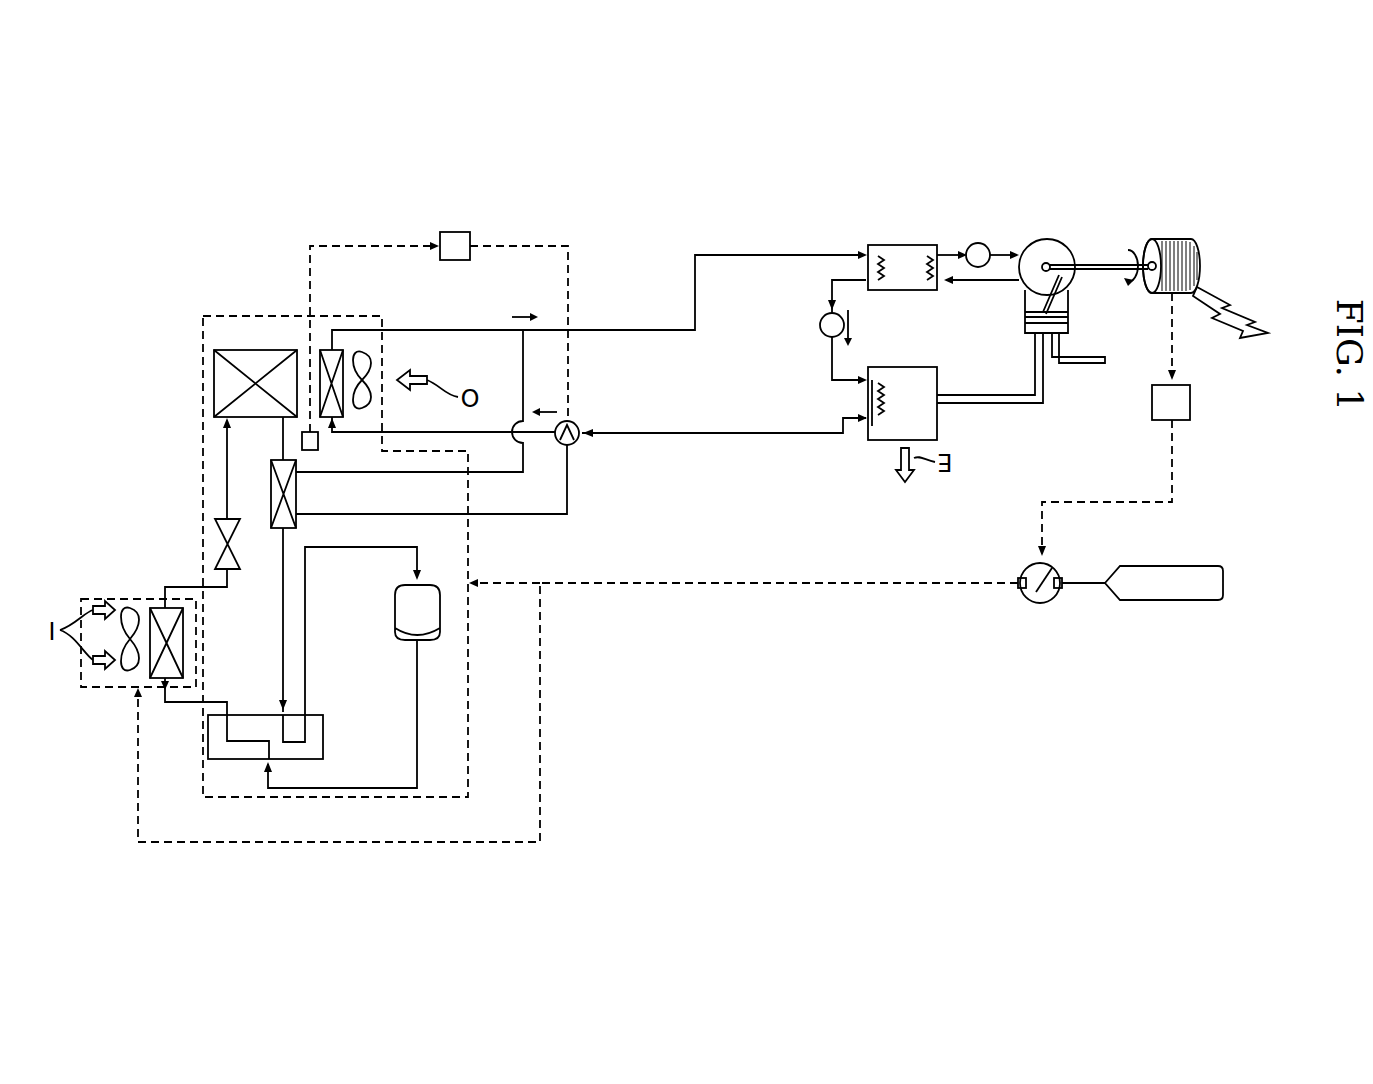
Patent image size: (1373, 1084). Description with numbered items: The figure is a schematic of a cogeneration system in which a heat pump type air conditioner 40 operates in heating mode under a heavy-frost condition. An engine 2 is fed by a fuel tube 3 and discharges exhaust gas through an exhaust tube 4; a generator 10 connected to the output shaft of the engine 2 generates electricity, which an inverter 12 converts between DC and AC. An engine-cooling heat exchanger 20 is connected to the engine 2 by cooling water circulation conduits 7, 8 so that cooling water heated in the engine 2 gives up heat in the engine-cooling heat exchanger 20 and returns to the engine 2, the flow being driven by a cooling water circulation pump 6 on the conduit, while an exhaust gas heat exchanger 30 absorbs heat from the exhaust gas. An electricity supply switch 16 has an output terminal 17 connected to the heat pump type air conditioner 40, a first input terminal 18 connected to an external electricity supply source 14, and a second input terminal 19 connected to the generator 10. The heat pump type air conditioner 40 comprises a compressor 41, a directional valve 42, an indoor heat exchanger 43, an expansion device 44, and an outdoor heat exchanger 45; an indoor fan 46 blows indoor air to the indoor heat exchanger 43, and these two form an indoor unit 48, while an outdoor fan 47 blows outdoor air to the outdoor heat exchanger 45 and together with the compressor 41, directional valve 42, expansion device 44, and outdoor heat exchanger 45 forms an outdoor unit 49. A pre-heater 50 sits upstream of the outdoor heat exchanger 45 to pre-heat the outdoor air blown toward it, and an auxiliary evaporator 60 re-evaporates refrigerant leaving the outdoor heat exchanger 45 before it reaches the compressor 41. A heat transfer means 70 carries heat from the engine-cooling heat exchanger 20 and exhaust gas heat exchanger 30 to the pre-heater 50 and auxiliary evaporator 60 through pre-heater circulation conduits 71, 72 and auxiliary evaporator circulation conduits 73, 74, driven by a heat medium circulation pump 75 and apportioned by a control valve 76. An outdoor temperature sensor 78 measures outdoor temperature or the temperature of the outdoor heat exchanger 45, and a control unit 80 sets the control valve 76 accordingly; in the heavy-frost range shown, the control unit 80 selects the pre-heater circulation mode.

The engine 2 is at (1058, 240).
The fuel tube 3 is at (1083, 358).
The exhaust tube 4 is at (986, 404).
The coolant pump 6 is at (982, 243).
The cooling water circulation conduit 7 is at (986, 282).
The cooling water circulation conduit 8 is at (947, 254).
The generator 10 is at (1168, 240).
The inverter 12 is at (1180, 400).
The external electricity supply source 14 is at (1175, 600).
The electricity supply switch 16 is at (1038, 603).
The output terminal 17 is at (1022, 580).
The first input terminal 18 is at (1058, 593).
The second input terminal 19 is at (1044, 560).
The engine-cooling heat exchanger 20 is at (890, 265).
The exhaust gas heat exchanger 30 is at (887, 441).
The heat pump type air conditioner 40 is at (112, 430).
The compressor 41 is at (397, 610).
The directional valve 42 is at (208, 760).
The indoor heat exchanger 43 is at (150, 678).
The expansion device 44 is at (216, 530).
The outdoor heat exchanger 45 is at (214, 385).
The indoor fan 46 is at (130, 612).
The outdoor fan 47 is at (362, 350).
The indoor unit 48 is at (127, 595).
The outdoor unit 49 is at (202, 342).
The pre-heater 50 is at (330, 350).
The auxiliary evaporator 60 is at (271, 500).
The heat transfer means 70 is at (585, 533).
The pre-heater circulation conduit 71 is at (706, 254).
The pre-heater circulation conduit 72 is at (765, 434).
The auxiliary evaporator circulation conduit 73 is at (548, 515).
The auxiliary evaporator circulation conduit 74 is at (523, 360).
The heat medium circulation pump 75 is at (821, 330).
The control valve 76 is at (576, 445).
The outdoor temperature sensor 78 is at (302, 440).
The control unit 80 is at (452, 246).